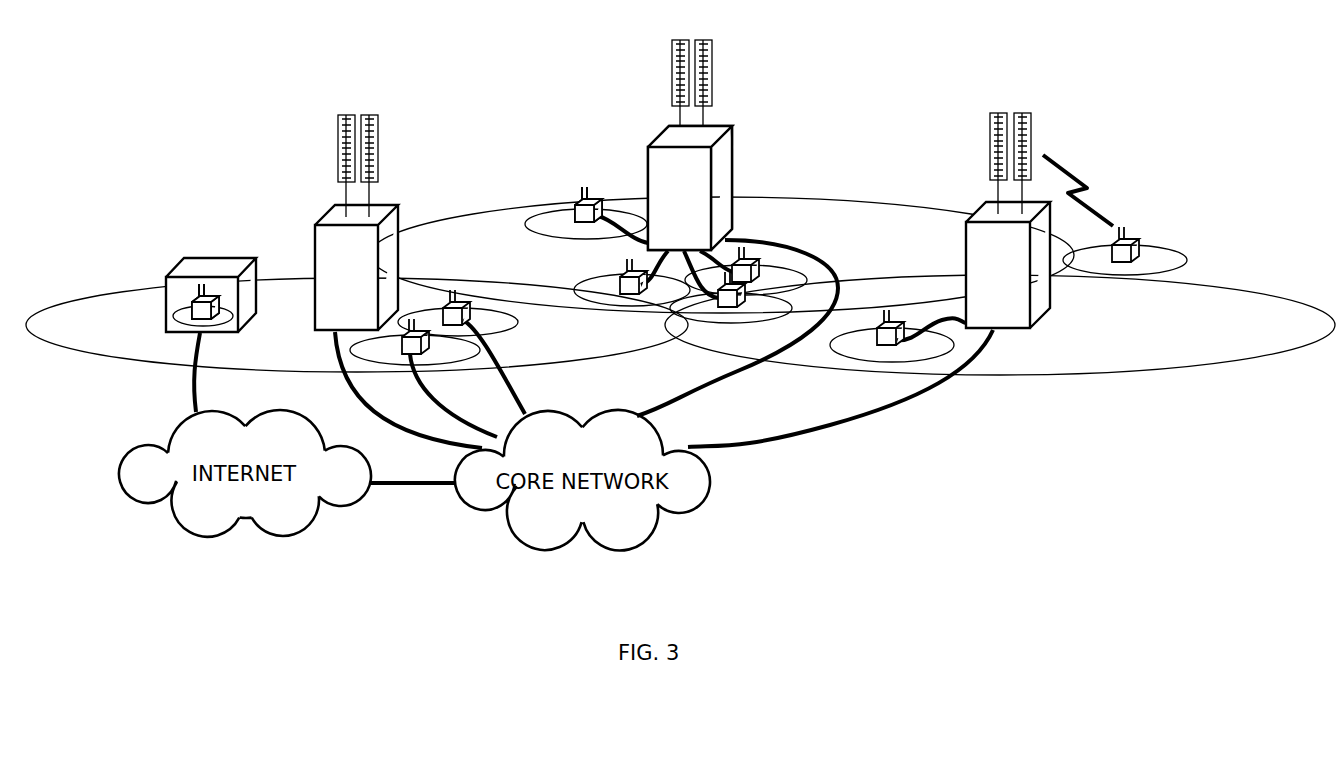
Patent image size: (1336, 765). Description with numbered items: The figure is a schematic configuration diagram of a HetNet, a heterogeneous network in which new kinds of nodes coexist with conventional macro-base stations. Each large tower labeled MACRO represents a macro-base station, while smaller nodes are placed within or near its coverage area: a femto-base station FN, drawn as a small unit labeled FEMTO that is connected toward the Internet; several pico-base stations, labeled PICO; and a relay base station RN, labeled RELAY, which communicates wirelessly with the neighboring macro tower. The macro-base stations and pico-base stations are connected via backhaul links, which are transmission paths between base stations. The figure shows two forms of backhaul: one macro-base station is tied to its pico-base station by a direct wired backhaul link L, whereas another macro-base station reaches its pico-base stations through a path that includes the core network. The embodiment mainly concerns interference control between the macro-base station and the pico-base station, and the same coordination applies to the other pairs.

The femto-base station FN is at (171, 271).
The femto base station FEMTO is at (211, 281).
The macro cell base station MACRO is at (724, 151).
The pico base station PICO is at (592, 188).
The wired backhaul link L is at (613, 232).
The relay base station RELAY is at (1003, 237).
The relay base station RN is at (1135, 243).